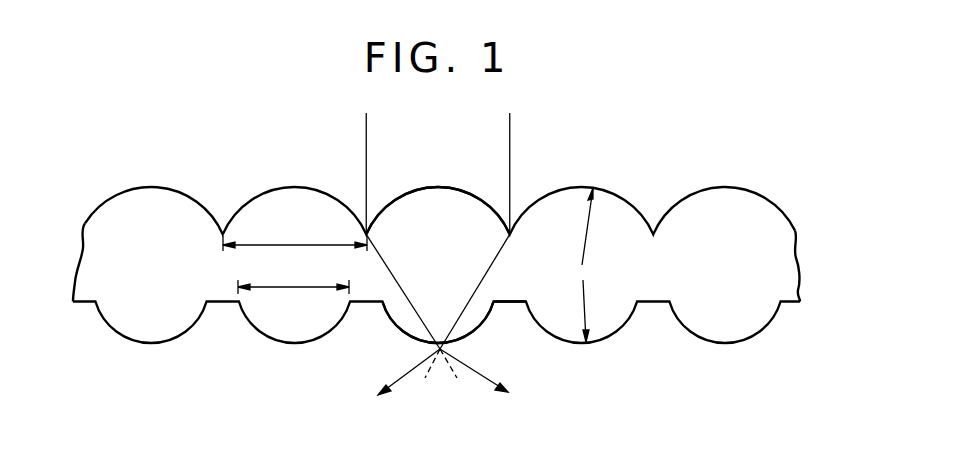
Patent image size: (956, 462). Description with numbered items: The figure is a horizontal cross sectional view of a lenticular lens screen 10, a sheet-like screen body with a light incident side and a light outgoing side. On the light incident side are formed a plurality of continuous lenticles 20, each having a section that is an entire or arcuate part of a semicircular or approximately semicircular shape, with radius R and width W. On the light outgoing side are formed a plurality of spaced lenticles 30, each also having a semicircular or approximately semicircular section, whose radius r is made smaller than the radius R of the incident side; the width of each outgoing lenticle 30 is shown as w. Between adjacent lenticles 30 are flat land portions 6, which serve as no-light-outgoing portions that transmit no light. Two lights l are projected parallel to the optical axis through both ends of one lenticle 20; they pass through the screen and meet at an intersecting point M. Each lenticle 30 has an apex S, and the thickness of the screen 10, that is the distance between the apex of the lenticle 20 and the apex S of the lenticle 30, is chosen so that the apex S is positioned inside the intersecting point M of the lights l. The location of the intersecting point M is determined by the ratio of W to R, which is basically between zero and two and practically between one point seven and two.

The lenticular lens screen 10 is at (737, 207).
The lenticle on the light incident side 20 is at (487, 199).
The lenticle on the light outgoing side 30 is at (482, 323).
The flat land portion 6 is at (515, 298).
The light l is at (510, 140).
The apex of the light outgoing side lenticle S is at (440, 345).
The intersecting point of the lights M is at (440, 352).
The radius of the light incident side lenticle R is at (595, 226).
The radius of the light outgoing side lenticle r is at (592, 311).
The width of the light incident side lenticle W is at (295, 235).
The width of the light outgoing side lenticle w is at (293, 278).